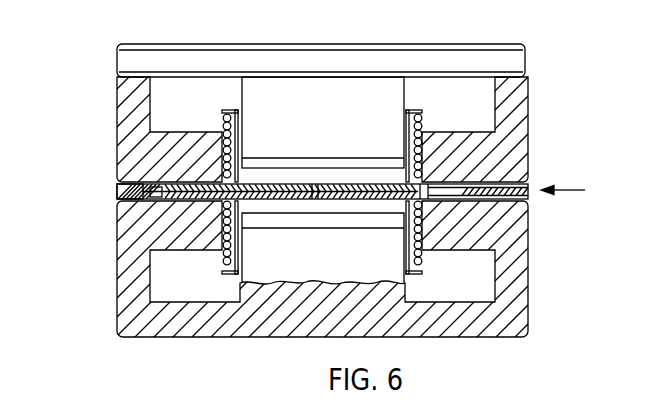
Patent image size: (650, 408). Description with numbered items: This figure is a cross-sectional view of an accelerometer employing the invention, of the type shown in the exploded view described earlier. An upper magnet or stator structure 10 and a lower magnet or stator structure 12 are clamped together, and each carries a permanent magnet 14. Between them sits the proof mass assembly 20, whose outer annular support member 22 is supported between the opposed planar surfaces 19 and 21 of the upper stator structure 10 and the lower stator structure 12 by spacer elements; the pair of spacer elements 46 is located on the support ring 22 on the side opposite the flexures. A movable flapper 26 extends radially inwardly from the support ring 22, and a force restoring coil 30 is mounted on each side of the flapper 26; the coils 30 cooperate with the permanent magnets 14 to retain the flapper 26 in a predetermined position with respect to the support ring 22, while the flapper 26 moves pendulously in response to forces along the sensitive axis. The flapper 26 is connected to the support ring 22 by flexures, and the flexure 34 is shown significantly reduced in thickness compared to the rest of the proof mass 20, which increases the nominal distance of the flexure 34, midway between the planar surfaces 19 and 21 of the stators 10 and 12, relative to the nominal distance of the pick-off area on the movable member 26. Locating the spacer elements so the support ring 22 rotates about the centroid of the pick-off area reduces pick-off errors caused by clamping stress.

The upper magnet or stator structure 10 is at (325, 204).
The lower magnet or stator structure 12 is at (519, 276).
The permanent magnet 14 is at (282, 93).
The planar surface of upper stator structure 19 is at (533, 182).
The proof mass assembly 20 is at (577, 190).
The planar surface of lower stator structure 21 is at (532, 201).
The outer annular support member 22 is at (307, 167).
The flapper 26 is at (175, 186).
The force restoring coil 30 is at (422, 122).
The flexure element 34 is at (505, 128).
The spacer element 46 is at (118, 200).